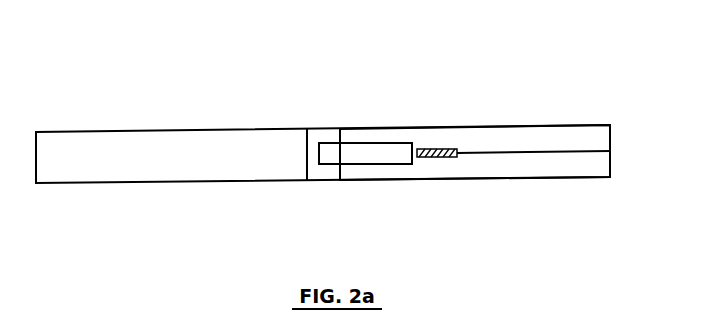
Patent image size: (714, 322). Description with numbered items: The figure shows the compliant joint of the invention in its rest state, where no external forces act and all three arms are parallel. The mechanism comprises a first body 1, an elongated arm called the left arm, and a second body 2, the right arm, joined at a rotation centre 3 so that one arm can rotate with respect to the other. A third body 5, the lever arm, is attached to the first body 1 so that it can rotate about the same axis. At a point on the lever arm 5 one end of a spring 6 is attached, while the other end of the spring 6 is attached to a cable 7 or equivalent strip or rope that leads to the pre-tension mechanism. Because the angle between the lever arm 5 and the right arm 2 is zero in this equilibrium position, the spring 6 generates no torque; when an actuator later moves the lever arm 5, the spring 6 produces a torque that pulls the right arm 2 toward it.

The first body 1 is at (89, 150).
The second body 2 is at (550, 142).
The rotation centre 3 is at (323, 154).
The third body 5 is at (373, 153).
The spring 6 is at (435, 152).
The cable 7 is at (510, 152).